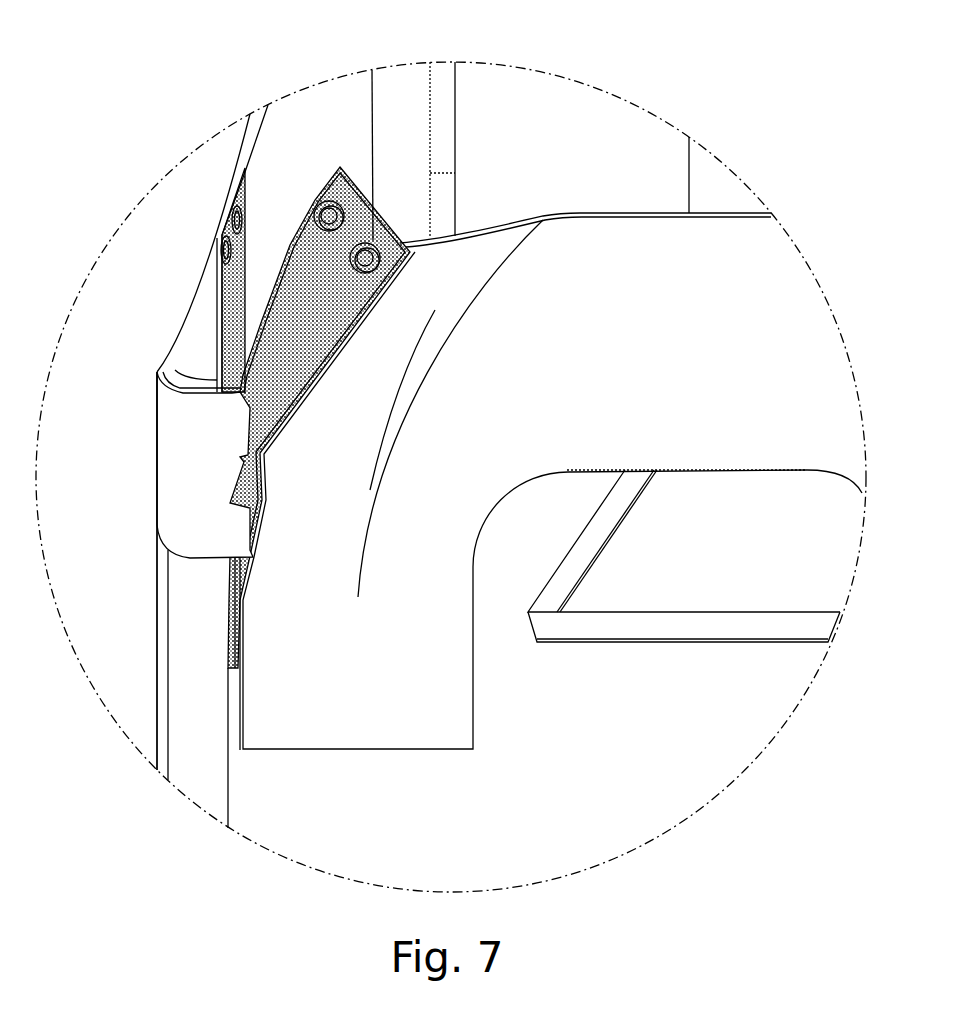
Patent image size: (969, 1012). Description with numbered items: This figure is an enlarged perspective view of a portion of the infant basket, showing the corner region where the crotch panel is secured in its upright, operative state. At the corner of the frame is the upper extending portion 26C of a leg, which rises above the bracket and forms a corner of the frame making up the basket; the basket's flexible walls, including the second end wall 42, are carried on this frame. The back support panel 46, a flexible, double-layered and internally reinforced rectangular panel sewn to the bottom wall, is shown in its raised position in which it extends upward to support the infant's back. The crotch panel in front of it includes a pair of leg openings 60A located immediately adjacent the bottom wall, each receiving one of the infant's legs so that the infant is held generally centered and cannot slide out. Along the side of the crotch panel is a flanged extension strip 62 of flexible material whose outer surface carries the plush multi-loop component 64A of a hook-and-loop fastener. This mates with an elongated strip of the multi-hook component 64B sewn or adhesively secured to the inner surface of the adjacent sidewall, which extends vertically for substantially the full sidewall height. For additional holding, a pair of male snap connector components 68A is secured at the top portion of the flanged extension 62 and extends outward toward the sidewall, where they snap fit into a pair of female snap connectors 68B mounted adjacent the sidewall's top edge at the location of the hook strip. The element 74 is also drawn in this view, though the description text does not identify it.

The upper extending portion 26C is at (192, 713).
The second end wall 42 is at (202, 490).
The back support panel 46 is at (722, 288).
The leg openings 60A is at (768, 558).
The flanged extension strip 62 is at (290, 402).
The multi-loop component 64A is at (260, 410).
The multi-hook component 64B is at (220, 338).
The male snap connector component 68A is at (372, 248).
The female snap connector 68B is at (225, 213).
The flange 74 is at (695, 630).